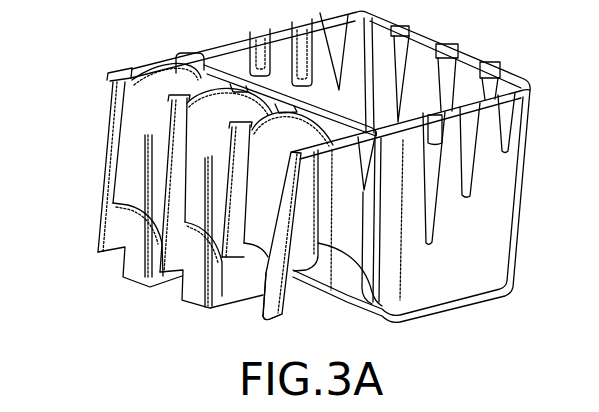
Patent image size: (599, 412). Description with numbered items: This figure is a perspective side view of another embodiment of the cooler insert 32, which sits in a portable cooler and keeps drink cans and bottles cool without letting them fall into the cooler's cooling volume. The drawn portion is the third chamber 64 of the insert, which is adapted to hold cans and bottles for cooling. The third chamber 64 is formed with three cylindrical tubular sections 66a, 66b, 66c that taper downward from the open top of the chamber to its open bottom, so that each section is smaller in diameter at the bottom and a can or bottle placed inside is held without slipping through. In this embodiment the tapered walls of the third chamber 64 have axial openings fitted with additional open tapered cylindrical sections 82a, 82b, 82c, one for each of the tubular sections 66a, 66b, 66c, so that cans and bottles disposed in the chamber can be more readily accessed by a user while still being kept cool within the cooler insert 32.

The cooler insert 32 is at (440, 282).
The third chamber 64 is at (112, 59).
The cylindrical tubular section 66a is at (289, 150).
The cylindrical tubular section 66b is at (227, 132).
The cylindrical tubular section 66c is at (167, 103).
The open tapered cylindrical section 82a is at (258, 293).
The open tapered cylindrical section 82b is at (196, 262).
The open tapered cylindrical section 82c is at (136, 232).